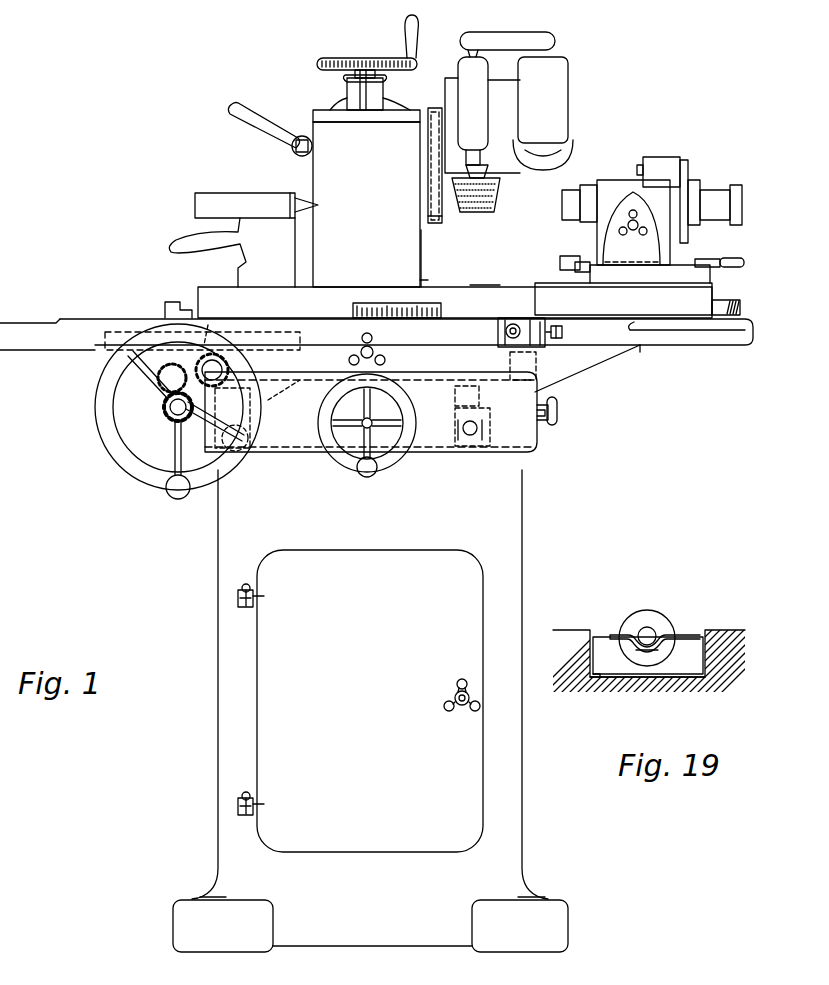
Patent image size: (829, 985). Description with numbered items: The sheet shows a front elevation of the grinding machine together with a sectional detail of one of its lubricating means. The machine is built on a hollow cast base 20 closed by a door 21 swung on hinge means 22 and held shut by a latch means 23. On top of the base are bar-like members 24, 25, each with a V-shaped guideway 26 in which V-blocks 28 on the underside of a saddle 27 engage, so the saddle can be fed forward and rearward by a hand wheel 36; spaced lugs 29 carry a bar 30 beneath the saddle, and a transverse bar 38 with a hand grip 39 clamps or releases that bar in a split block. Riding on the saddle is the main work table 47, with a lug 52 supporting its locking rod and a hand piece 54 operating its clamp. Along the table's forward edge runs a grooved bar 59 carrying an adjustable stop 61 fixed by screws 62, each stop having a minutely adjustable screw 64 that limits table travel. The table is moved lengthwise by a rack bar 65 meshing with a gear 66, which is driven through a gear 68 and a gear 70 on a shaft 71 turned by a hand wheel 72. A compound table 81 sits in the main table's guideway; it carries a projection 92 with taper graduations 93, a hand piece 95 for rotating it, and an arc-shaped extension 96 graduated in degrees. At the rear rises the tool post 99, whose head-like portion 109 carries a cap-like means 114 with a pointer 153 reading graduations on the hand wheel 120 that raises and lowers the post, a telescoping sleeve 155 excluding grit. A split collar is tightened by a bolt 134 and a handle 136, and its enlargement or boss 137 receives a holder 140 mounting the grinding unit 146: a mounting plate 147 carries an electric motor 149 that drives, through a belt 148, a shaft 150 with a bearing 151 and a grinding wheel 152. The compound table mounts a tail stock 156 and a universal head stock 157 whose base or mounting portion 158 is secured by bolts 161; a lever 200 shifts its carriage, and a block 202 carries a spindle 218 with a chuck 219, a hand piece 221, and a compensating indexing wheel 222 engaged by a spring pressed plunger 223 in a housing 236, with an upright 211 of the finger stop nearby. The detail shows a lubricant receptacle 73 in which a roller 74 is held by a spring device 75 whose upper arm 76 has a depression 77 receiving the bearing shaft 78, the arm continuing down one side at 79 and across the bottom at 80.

In FIG. 1, the base 20 is at (539, 543).
In FIG. 1, the door 21 is at (483, 772).
In FIG. 1, the hinge means 22 is at (236, 596).
In FIG. 1, the latch means 23 is at (456, 712).
In FIG. 1, the bar-like member 24 is at (495, 433).
In FIG. 1, the bar-like member 25 is at (242, 445).
In FIG. 1, the V-shaped guideway 26 is at (248, 408).
In FIG. 1, the saddle 27 is at (612, 385).
In FIG. 1, the V-blocks 28 is at (252, 402).
In FIG. 1, the spaced lugs 29 is at (455, 398).
In FIG. 1, the bar 30 is at (470, 438).
In FIG. 1, the hand wheel 36 is at (346, 462).
In FIG. 1, the bar 38 is at (540, 424).
In FIG. 1, the hand grip 39 is at (560, 419).
In FIG. 1, the main work table 47 is at (81, 310).
In FIG. 1, the lug 52 is at (540, 384).
In FIG. 1, the hand piece 54 is at (360, 346).
In FIG. 1, the grooved bar 59 is at (478, 322).
In FIG. 1, the adjustable stop 61 is at (540, 330).
In FIG. 1, the screws 62 is at (520, 326).
In FIG. 1, the screw 64 is at (565, 332).
In FIG. 1, the rack bar 65 is at (112, 330).
In FIG. 1, the gear 66 is at (210, 326).
In FIG. 1, the gear 68 is at (160, 398).
In FIG. 1, the gear 70 is at (170, 415).
In FIG. 1, the shaft 71 is at (177, 418).
In FIG. 1, the hand wheel 72 is at (145, 478).
In FIG. 1, the compound table 81 is at (494, 284).
In FIG. 1, the projection 92 is at (722, 300).
In FIG. 1, the graduations 93 is at (740, 305).
In FIG. 1, the hand piece 95 is at (167, 302).
In FIG. 1, the arc-shaped extension 96 is at (382, 303).
In FIG. 1, the tool post 99 is at (432, 264).
In FIG. 1, the head-like portion 109 is at (334, 84).
In FIG. 1, the cap-like means 114 is at (380, 102).
In FIG. 1, the hand wheel 120 is at (340, 58).
In FIG. 1, the bolt 134 is at (292, 148).
In FIG. 1, the handle 136 is at (240, 100).
In FIG. 1, the enlargement or boss 137 is at (418, 148).
In FIG. 1, the holder 140 is at (446, 240).
In FIG. 1, the grinding unit 146 is at (588, 78).
In FIG. 1, the mounting plate 147 is at (436, 108).
In FIG. 1, the belt 148 is at (508, 36).
In FIG. 1, the electric motor 149 is at (568, 108).
In FIG. 1, the shaft 150 is at (474, 48).
In FIG. 1, the bearing 151 is at (488, 106).
In FIG. 1, the grinding wheel 152 is at (492, 214).
In FIG. 1, the pointer 153 is at (360, 98).
In FIG. 1, the sleeve 155 is at (422, 281).
In FIG. 1, the tail stock 156 is at (221, 182).
In FIG. 1, the universal head stock 157 is at (698, 149).
In FIG. 1, the base or mounting portion 158 is at (670, 285).
In FIG. 1, the bolts 161 is at (730, 262).
In FIG. 1, the lever 200 is at (708, 258).
In FIG. 1, the block 202 is at (622, 180).
In FIG. 1, the upright 211 is at (628, 218).
In FIG. 1, the spindle 218 is at (575, 200).
In FIG. 1, the chuck 219 is at (565, 208).
In FIG. 1, the hand piece 221 is at (740, 188).
In FIG. 1, the compensating indexing wheel 222 is at (705, 171).
In FIG. 1, the spring pressed plunger 223 is at (660, 158).
In FIG. 1, the housing 236 is at (684, 160).
In FIG. 19, the receptacle 73 is at (723, 632).
In FIG. 19, the roller 74 is at (662, 622).
In FIG. 19, the spring device 75 is at (689, 670).
In FIG. 19, the upper arm 76 is at (612, 633).
In FIG. 19, the depression 77 is at (638, 650).
In FIG. 19, the bearing shaft 78 is at (646, 627).
In FIG. 19, the side portion 79 is at (703, 661).
In FIG. 19, the bottom portion 80 is at (625, 682).